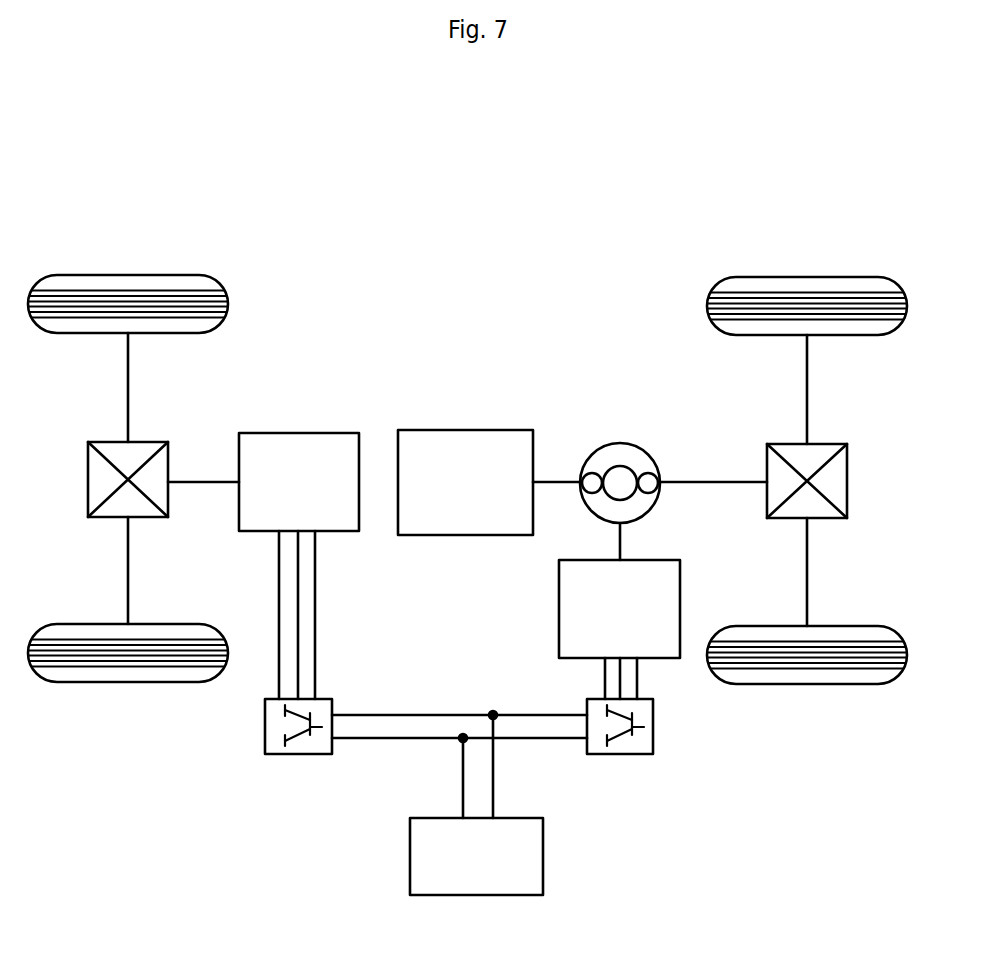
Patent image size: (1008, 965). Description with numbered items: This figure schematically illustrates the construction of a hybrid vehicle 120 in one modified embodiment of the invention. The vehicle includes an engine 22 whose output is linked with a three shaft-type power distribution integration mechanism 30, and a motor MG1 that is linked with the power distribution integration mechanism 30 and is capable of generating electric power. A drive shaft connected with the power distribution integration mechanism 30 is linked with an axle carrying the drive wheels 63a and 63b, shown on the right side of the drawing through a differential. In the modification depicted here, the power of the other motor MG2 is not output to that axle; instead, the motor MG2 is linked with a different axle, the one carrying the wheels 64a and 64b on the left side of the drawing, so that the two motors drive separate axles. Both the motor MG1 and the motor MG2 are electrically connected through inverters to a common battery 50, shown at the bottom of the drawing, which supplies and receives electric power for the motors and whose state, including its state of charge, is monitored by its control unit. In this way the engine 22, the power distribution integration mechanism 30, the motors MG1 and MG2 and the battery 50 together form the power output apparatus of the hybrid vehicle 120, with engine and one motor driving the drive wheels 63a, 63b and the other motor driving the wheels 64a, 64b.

The hybrid vehicle 120 is at (503, 253).
The engine 22 is at (466, 428).
The power distribution integration mechanism 30 is at (625, 443).
The battery 50 is at (543, 855).
The motor MG1 is at (559, 608).
The motor MG2 is at (296, 433).
The drive wheel 63a is at (807, 278).
The drive wheel 63b is at (808, 684).
The wheel 64a is at (128, 277).
The wheel 64b is at (128, 683).